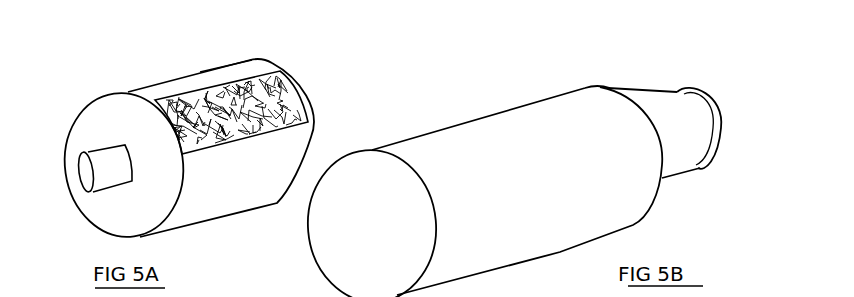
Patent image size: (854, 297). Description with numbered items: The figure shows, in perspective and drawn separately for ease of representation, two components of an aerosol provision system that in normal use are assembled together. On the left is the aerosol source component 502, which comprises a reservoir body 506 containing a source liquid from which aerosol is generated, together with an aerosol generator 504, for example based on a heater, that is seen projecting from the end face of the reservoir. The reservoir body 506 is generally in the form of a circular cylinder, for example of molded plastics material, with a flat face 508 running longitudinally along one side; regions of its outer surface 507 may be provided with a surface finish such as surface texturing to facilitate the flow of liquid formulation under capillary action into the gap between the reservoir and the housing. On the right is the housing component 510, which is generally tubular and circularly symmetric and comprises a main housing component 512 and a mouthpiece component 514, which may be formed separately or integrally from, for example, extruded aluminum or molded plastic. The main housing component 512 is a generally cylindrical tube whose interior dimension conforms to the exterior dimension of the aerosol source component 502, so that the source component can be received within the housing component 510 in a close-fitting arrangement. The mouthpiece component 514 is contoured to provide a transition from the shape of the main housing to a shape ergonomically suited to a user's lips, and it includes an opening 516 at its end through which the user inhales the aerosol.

In FIG. 5A, the aerosol source component 502 is at (161, 49).
In FIG. 5A, the aerosol generator 504 is at (87, 191).
In FIG. 5A, the reservoir body 506 is at (233, 193).
In FIG. 5A, the outer surface 507 is at (258, 68).
In FIG. 5A, the flat face 508 is at (293, 77).
In FIG. 5B, the housing component 510 is at (454, 78).
In FIG. 5B, the main housing component 512 is at (530, 102).
In FIG. 5B, the mouthpiece component 514 is at (652, 92).
In FIG. 5B, the opening 516 is at (723, 113).